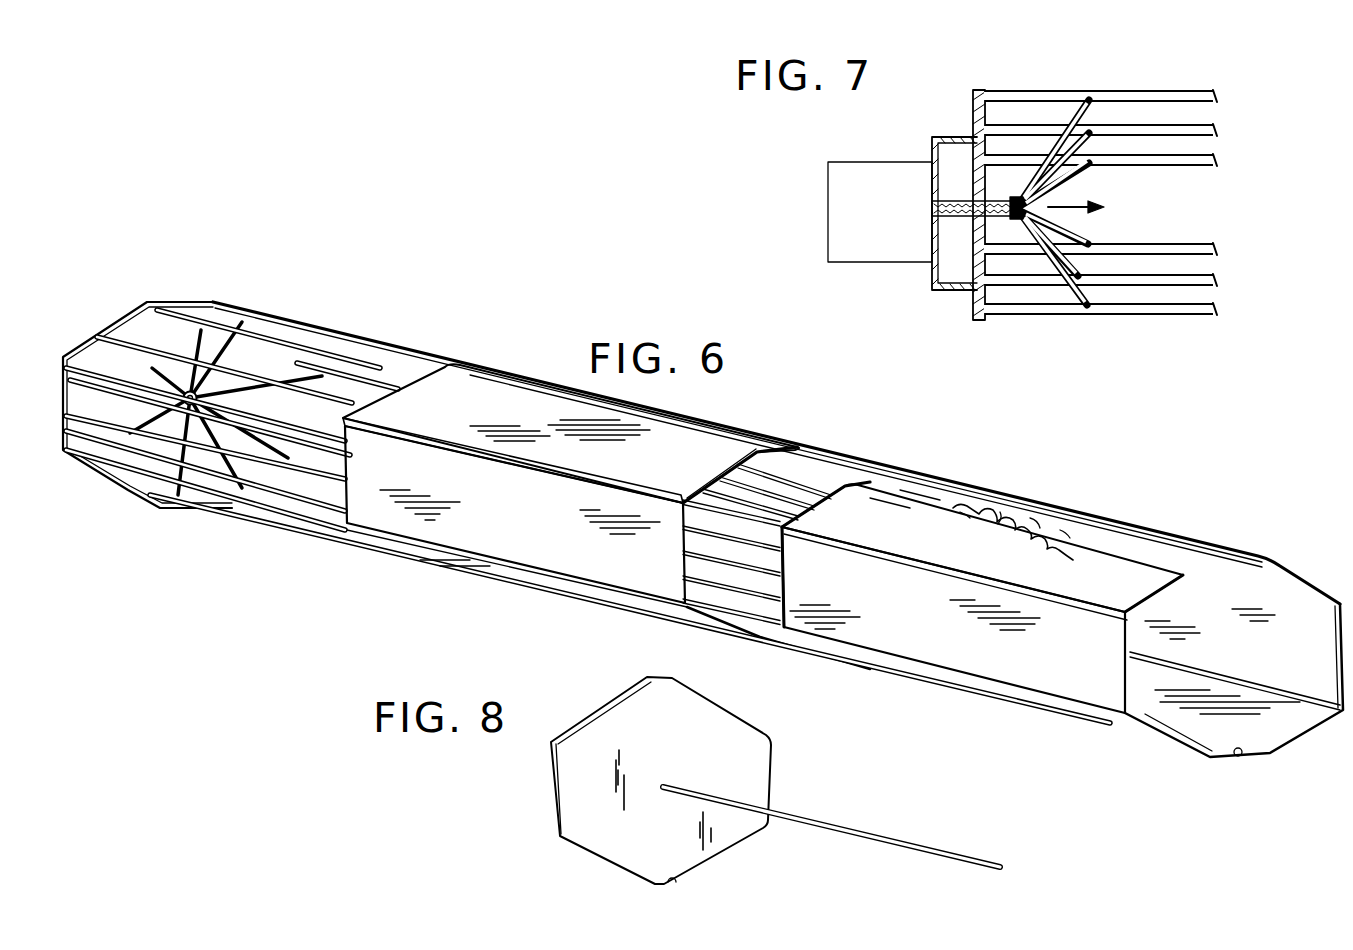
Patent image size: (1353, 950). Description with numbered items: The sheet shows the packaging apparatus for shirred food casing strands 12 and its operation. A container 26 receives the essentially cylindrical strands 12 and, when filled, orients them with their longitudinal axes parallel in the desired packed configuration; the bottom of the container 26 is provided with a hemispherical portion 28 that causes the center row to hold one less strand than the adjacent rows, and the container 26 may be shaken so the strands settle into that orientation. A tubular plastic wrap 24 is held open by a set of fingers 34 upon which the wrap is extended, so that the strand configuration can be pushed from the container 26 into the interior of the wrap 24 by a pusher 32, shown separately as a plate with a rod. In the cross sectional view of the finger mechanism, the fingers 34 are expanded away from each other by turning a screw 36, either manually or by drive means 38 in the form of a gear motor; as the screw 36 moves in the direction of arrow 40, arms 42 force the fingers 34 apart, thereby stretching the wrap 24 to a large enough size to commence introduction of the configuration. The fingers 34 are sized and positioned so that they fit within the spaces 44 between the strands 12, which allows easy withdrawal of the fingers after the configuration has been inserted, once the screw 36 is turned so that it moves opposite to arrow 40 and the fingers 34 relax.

In FIG. 6, the shirred food casing strands 12 is at (845, 464).
In FIG. 6, the plastic wrap 24 is at (505, 576).
In FIG. 6, the container 26 is at (1003, 702).
In FIG. 6, the hemispherical portion 28 is at (1242, 757).
In FIG. 8, the pusher 32 is at (740, 732).
In FIG. 6, the fingers 34 is at (295, 328).
In FIG. 7, the fingers 34 is at (1153, 286).
In FIG. 7, the screw 36 is at (988, 152).
In FIG. 7, the drive means 38 is at (875, 177).
In FIG. 7, the arrow 40 is at (1083, 203).
In FIG. 7, the arms 42 is at (1082, 238).
In FIG. 6, the spaces 44 is at (973, 498).